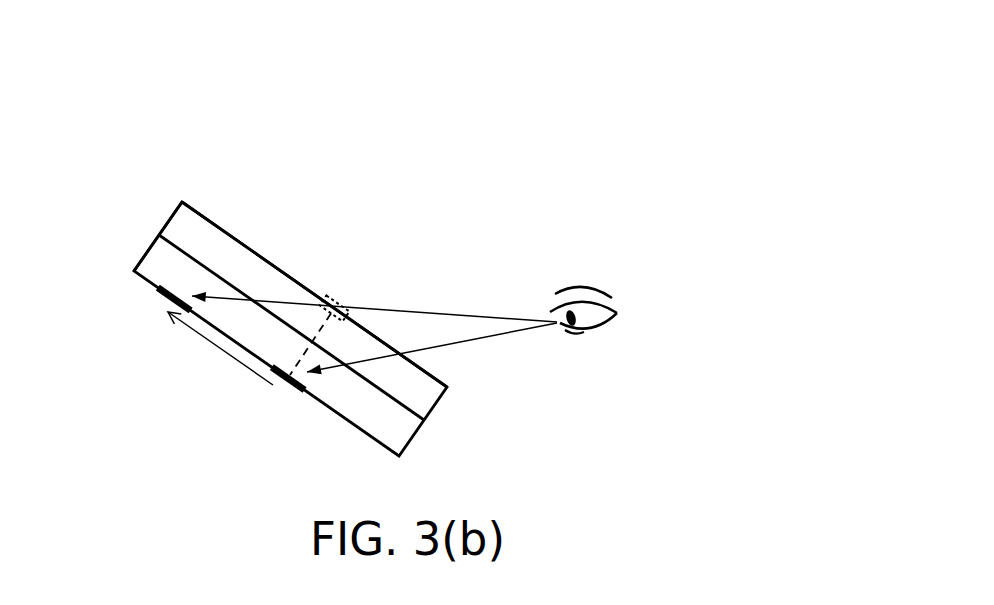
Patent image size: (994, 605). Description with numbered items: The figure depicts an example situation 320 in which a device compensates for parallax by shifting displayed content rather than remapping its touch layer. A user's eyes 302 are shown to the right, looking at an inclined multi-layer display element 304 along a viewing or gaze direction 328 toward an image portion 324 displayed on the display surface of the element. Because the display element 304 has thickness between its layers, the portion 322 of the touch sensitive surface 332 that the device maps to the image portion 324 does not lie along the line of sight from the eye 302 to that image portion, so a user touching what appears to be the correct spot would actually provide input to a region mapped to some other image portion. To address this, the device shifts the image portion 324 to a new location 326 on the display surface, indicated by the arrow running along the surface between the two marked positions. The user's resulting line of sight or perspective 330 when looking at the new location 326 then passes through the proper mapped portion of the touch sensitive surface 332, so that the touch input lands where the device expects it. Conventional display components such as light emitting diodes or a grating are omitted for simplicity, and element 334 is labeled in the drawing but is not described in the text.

The user's eyes 302 is at (636, 303).
The display element 304 is at (180, 202).
The example situation 320 is at (842, 115).
The portion of the touch sensitive surface 322 is at (335, 294).
The image portion 324 is at (278, 382).
The new location 326 is at (166, 303).
The viewing or gaze direction 328 is at (470, 339).
The line of sight or perspective 330 is at (462, 315).
The touch sensitive surface 332 is at (206, 216).
The side edge of display 334 is at (135, 272).